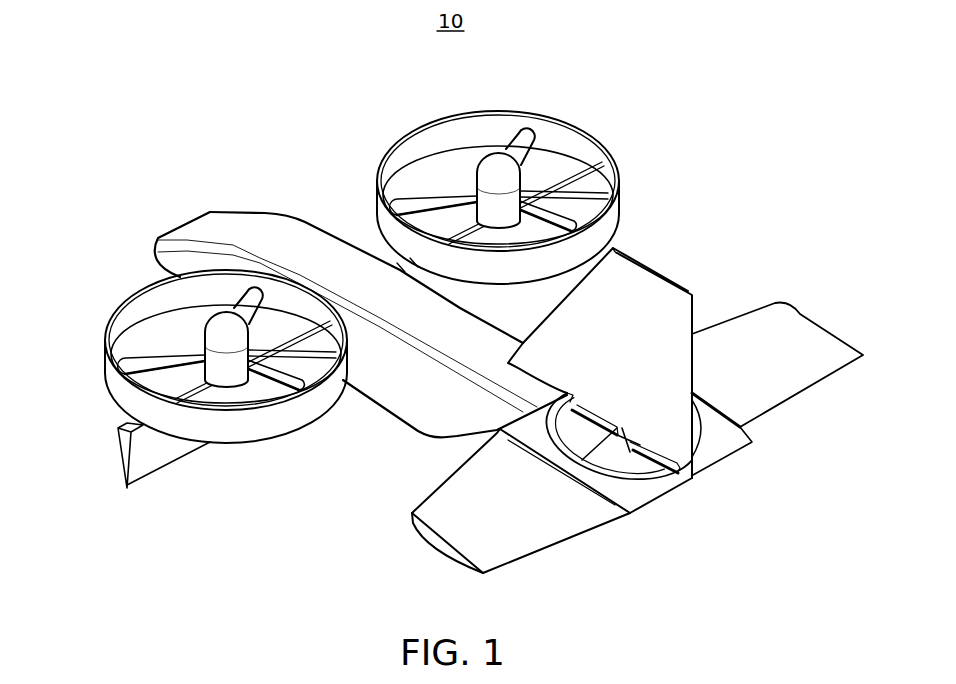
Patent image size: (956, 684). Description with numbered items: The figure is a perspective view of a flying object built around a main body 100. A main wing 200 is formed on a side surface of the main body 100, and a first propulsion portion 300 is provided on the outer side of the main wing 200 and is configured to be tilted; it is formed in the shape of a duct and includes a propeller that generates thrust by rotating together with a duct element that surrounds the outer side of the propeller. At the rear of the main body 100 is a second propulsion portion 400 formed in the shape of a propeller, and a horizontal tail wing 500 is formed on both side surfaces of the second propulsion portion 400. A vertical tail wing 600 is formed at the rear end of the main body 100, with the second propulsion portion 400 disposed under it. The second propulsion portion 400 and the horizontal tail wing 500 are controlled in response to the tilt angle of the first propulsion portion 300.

The main body 100 is at (200, 228).
The main wing 200 is at (123, 453).
The first propulsion portion 300 is at (110, 363).
The second propulsion portion 400 is at (603, 450).
The horizontal tail wing 500 is at (802, 330).
The vertical tail wing 600 is at (643, 285).